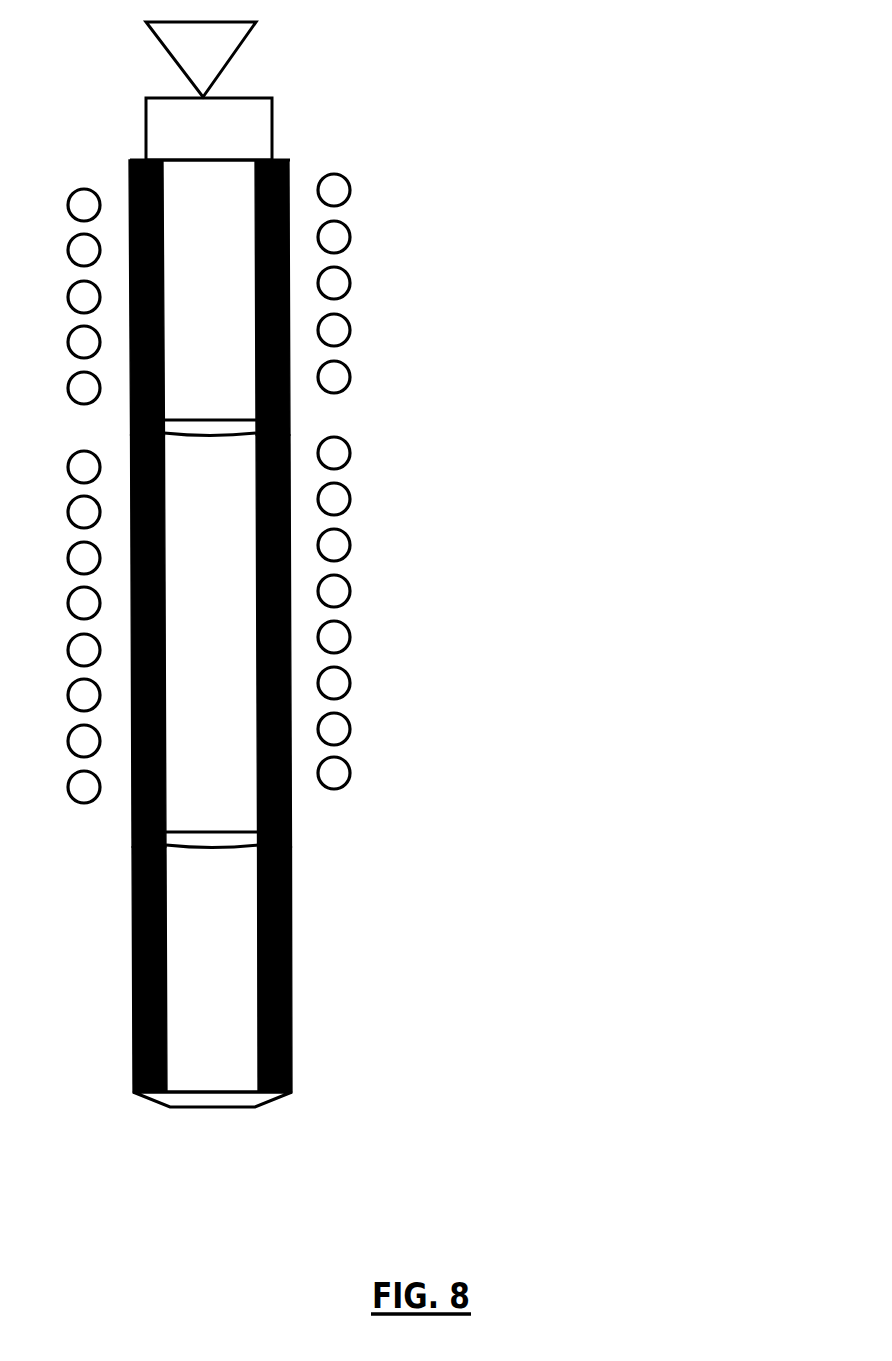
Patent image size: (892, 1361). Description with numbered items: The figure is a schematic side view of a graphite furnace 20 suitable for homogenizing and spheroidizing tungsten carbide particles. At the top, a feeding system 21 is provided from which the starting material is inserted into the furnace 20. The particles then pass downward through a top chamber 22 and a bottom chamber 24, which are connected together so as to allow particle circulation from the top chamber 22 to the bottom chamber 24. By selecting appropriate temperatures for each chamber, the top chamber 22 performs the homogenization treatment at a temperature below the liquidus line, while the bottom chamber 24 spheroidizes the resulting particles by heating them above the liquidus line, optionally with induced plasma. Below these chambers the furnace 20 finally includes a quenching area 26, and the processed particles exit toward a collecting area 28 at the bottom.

The graphite furnace 20 is at (624, 161).
The feeding system 21 is at (278, 82).
The top chamber 22 is at (230, 327).
The bottom chamber 24 is at (228, 632).
The quenching area 26 is at (215, 953).
The collecting area 28 is at (215, 1153).